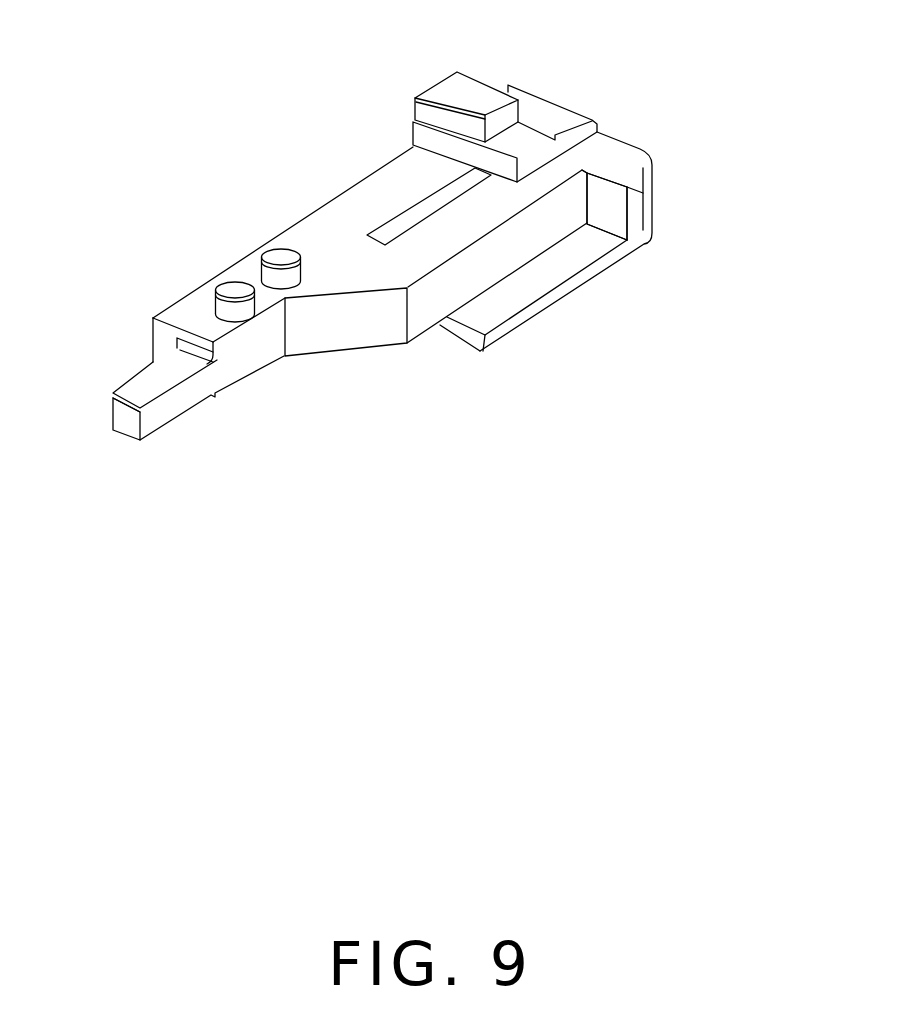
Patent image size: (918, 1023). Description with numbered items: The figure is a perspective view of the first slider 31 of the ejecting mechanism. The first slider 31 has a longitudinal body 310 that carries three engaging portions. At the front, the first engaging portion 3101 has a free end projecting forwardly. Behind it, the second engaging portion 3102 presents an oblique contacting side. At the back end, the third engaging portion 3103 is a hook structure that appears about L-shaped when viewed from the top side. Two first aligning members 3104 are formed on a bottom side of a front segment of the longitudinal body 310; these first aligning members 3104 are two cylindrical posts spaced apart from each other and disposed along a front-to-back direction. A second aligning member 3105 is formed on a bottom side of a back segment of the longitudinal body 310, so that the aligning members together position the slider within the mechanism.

The first slider 31 is at (263, 180).
The longitudinal body 310 is at (333, 197).
The first engaging portion 3101 is at (125, 422).
The second engaging portion 3102 is at (342, 322).
The third engaging portion 3103 is at (605, 208).
The first aligning members 3104 is at (232, 288).
The second aligning member 3105 is at (467, 95).